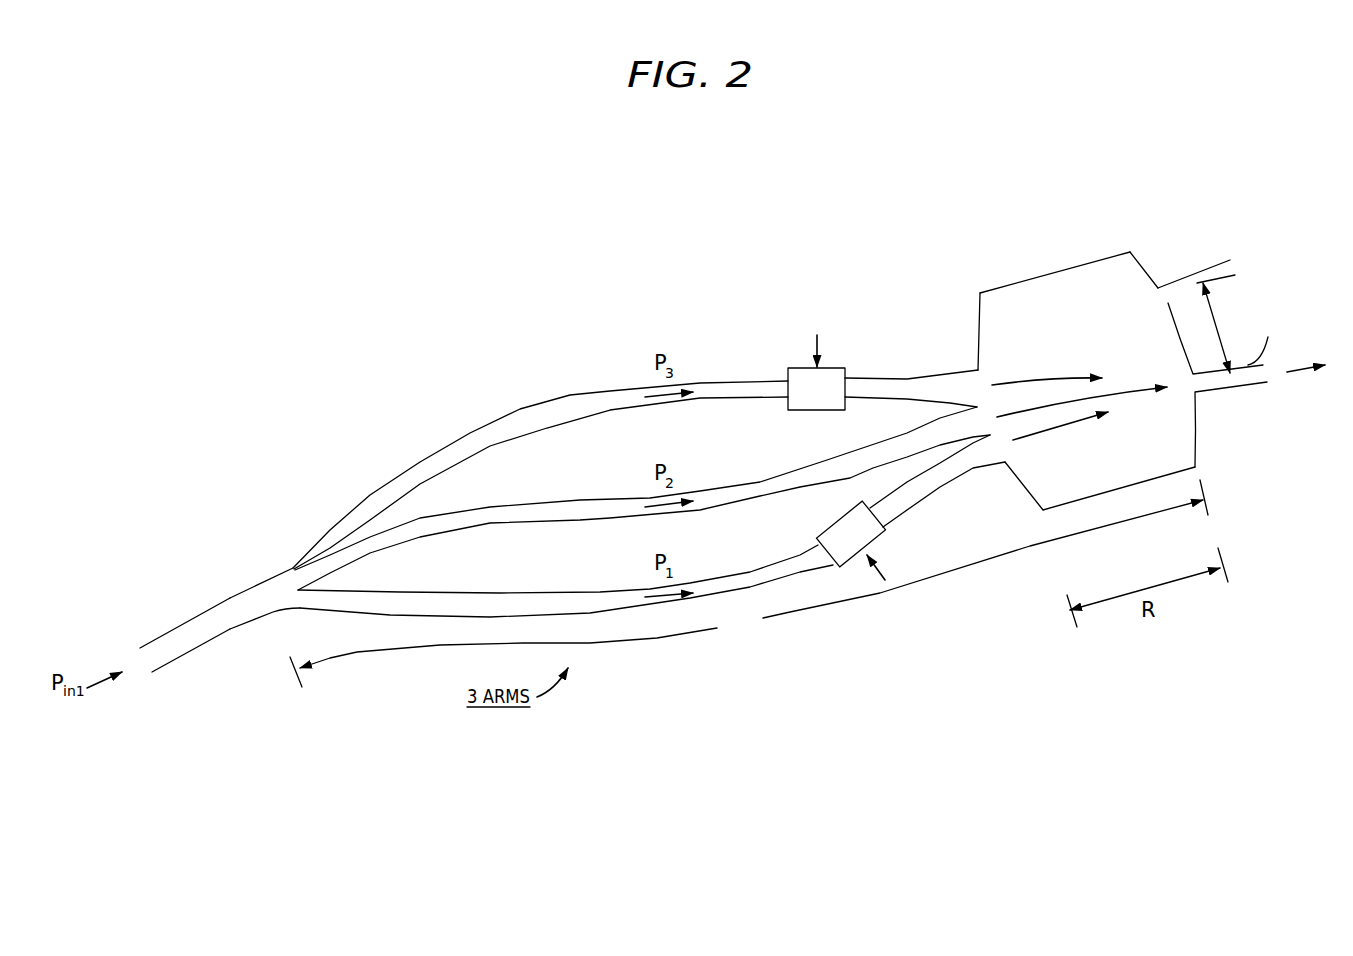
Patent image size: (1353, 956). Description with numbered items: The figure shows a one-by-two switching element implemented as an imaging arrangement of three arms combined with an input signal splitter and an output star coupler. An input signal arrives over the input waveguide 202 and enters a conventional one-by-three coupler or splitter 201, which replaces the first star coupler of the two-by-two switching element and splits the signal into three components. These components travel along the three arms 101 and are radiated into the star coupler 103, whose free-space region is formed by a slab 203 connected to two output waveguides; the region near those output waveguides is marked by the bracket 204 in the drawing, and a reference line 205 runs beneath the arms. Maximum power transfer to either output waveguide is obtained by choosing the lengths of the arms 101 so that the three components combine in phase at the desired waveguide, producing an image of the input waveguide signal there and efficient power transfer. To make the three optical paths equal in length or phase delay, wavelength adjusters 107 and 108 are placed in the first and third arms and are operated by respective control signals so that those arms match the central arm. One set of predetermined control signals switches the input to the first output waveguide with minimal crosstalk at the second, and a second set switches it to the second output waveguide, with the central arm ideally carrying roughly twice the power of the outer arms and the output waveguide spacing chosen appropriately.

The arms 101 is at (917, 298).
The star coupler 103 is at (1158, 177).
The wavelength adjuster 107 is at (878, 527).
The wavelength adjuster 108 is at (840, 368).
The 1×3 coupler or splitter 201 is at (308, 527).
The input waveguide 202 is at (192, 637).
The slab 203 is at (1055, 272).
The output section 204 is at (1217, 216).
The arm length reference line 205 is at (749, 583).